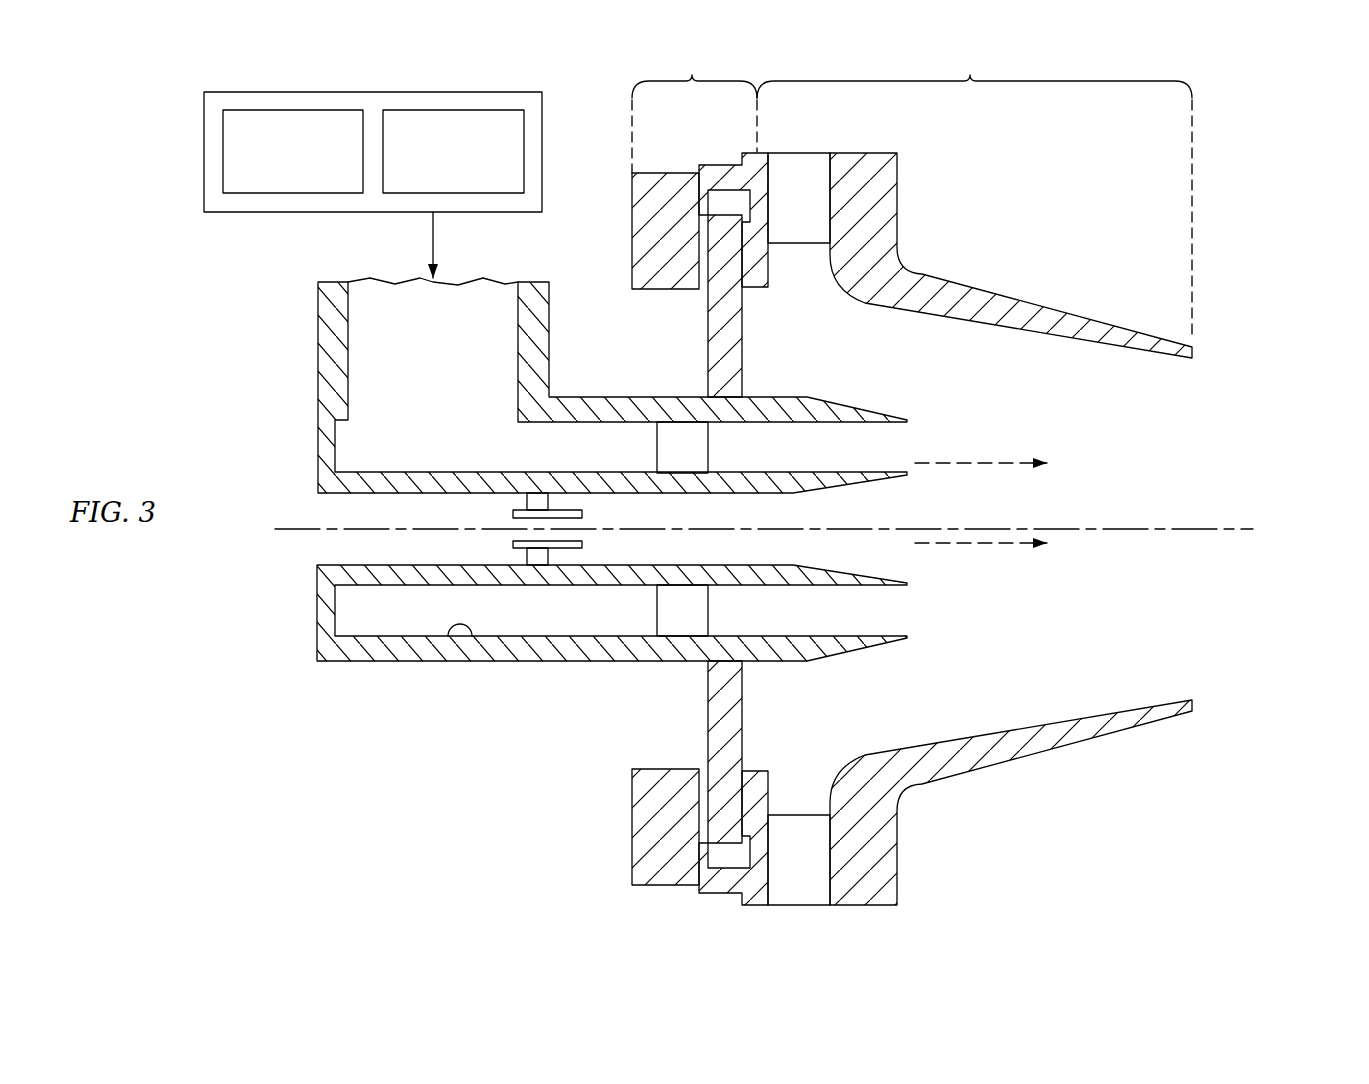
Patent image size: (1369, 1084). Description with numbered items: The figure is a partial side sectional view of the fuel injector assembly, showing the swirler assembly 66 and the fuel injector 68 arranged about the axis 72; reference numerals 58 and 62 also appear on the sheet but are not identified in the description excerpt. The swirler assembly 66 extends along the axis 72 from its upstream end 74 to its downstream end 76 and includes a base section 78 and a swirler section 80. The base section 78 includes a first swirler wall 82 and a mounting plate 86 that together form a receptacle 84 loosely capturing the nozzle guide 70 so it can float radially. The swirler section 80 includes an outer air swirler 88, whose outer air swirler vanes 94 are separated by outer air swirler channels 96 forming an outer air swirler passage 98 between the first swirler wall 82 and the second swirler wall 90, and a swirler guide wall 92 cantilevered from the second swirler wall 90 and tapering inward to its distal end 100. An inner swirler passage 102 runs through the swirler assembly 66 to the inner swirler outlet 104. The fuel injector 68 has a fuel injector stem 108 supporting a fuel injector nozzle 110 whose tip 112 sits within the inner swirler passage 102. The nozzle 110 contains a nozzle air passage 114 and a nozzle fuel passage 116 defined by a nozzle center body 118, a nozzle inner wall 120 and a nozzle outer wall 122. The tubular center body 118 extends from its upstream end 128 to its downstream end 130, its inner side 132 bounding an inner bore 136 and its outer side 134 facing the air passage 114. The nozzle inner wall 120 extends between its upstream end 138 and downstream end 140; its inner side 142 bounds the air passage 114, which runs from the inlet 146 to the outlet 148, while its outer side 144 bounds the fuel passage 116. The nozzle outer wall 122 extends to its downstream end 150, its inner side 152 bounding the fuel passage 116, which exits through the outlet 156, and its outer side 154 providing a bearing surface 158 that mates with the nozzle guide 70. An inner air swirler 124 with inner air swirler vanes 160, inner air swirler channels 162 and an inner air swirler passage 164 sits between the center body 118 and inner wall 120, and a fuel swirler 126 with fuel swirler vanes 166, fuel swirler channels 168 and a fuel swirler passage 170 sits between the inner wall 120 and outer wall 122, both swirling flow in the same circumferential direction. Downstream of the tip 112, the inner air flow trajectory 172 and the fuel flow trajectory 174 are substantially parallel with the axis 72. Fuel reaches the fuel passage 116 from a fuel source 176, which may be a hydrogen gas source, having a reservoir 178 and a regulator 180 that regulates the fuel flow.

The seal assembly 58 is at (1261, 471).
The first component 62 is at (1208, 190).
The swirler assembly 66 is at (1048, 246).
The fuel injector 68 is at (382, 775).
The nozzle guide 70 is at (708, 315).
The axis 72 is at (1253, 530).
The upstream end 74 is at (632, 230).
The downstream end 76 is at (1264, 367).
The base section 78 is at (694, 108).
The swirler section 80 is at (974, 189).
The first swirler wall 82 is at (717, 164).
The receptacle 84 is at (712, 205).
The mounting plate 86 is at (665, 172).
The outer air swirler 88 is at (799, 150).
The second swirler wall 90 is at (885, 152).
The swirler guide wall 92 is at (977, 283).
The outer air swirler vanes 94 is at (800, 244).
The outer air swirler channel 96 is at (897, 528).
The outer air swirler passage 98 is at (820, 198).
The distal end 100 is at (1194, 354).
The inner swirler passage 102 is at (1060, 411).
The inner swirler outlet 104 is at (1172, 647).
The fuel injector stem 108 is at (310, 348).
The fuel injector nozzle 110 is at (452, 673).
The nozzle tip 112 is at (967, 652).
The nozzle air passage 114 is at (325, 546).
The nozzle fuel passage 116 is at (436, 453).
The nozzle center body 118 is at (563, 552).
The nozzle inner wall 120 is at (476, 468).
The nozzle outer wall 122 is at (607, 394).
The inner air swirler 124 is at (507, 500).
The fuel swirler 126 is at (722, 446).
The upstream end 128 is at (513, 545).
The downstream end 130 is at (583, 545).
The inner side 132 is at (583, 520).
The outer side 134 is at (566, 550).
The inner bore 136 is at (537, 550).
The upstream end 138 is at (317, 583).
The downstream end 140 is at (882, 582).
The inner side 142 is at (355, 565).
The outer side 144 is at (367, 583).
The inlet 146 is at (312, 502).
The outlet 148 is at (870, 503).
The downstream end 150 is at (880, 637).
The inner side 152 is at (452, 636).
The outer side 154 is at (475, 663).
The outlet 156 is at (905, 444).
The bearing surface 158 is at (762, 396).
The inner air swirler vanes 160 is at (540, 492).
The inner air swirler channel 162 is at (580, 476).
The inner air swirler passage 164 is at (543, 505).
The fuel swirler vanes 166 is at (682, 432).
The fuel swirler channel 168 is at (761, 569).
The fuel swirler passage 170 is at (690, 606).
The trajectory 172 is at (1000, 544).
The trajectory 174 is at (1000, 463).
The fuel source 176 is at (420, 84).
The reservoir 178 is at (316, 178).
The regulator 180 is at (476, 178).